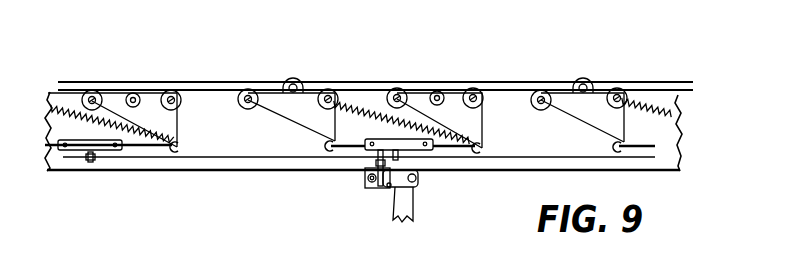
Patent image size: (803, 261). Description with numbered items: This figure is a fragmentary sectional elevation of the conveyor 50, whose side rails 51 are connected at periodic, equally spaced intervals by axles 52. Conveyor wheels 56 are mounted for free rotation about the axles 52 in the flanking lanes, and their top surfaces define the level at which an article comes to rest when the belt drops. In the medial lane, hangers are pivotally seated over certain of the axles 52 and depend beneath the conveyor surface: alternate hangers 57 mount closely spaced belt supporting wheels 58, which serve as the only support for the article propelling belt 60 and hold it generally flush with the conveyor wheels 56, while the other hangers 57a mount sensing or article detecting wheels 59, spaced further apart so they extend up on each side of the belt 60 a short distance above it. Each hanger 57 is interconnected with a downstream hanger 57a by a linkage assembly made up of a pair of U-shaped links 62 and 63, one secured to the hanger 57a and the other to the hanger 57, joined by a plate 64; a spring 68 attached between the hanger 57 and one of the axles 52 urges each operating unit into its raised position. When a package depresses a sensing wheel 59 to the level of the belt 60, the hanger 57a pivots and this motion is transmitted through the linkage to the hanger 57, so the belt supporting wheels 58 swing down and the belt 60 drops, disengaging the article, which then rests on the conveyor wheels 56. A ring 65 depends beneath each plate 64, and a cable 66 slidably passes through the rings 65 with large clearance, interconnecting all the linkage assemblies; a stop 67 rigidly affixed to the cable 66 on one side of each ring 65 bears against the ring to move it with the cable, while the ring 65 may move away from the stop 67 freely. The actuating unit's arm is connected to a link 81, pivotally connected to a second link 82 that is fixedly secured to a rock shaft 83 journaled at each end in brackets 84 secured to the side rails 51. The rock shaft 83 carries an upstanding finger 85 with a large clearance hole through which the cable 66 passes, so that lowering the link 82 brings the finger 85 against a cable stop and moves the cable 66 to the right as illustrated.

The conveyor 50 is at (690, 148).
The side rails 51 is at (661, 171).
The axles 52 is at (540, 96).
The conveyor wheels 56 is at (178, 92).
The hangers 57 is at (168, 121).
The hangers 57a is at (285, 118).
The belt supporting wheels 58 is at (127, 92).
The sensing or article detecting wheels 59 is at (289, 81).
The article propelling belt 60 is at (660, 84).
The U-shaped link 62 is at (330, 143).
The U-shaped link 63 is at (472, 158).
The plate 64 is at (387, 140).
The ring 65 is at (97, 160).
The cable 66 is at (263, 158).
The stop 67 is at (88, 161).
The spring 68 is at (366, 106).
The link 81 is at (412, 207).
The second link 82 is at (391, 188).
The rock shaft 83 is at (377, 187).
The brackets 84 is at (388, 187).
The upstanding finger 85 is at (378, 165).